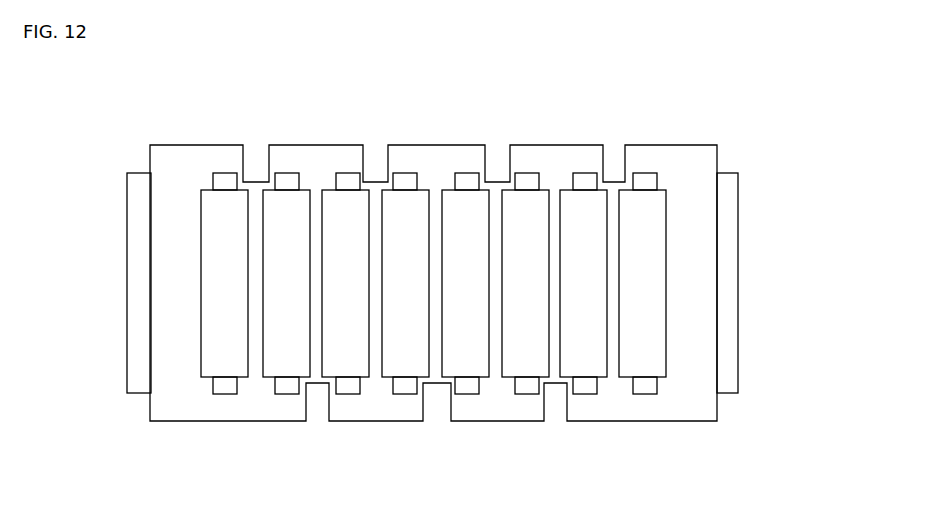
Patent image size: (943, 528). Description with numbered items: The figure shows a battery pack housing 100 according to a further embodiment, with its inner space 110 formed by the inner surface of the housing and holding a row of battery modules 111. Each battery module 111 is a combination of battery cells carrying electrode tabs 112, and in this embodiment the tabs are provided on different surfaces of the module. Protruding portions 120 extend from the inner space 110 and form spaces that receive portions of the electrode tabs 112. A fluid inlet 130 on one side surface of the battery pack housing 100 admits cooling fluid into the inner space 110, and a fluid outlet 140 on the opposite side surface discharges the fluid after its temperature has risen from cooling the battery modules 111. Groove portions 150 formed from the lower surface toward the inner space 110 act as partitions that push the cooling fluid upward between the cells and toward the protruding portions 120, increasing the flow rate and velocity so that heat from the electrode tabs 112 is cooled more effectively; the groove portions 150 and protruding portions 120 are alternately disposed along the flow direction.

The battery pack housing 100 is at (433, 297).
The inner space 110 is at (442, 216).
The battery module 111 is at (648, 343).
The electrode tab 112 is at (348, 185).
The protruding portion 120 is at (432, 163).
The fluid inlet 130 is at (148, 272).
The fluid outlet 140 is at (729, 285).
The groove portion 150 is at (557, 403).